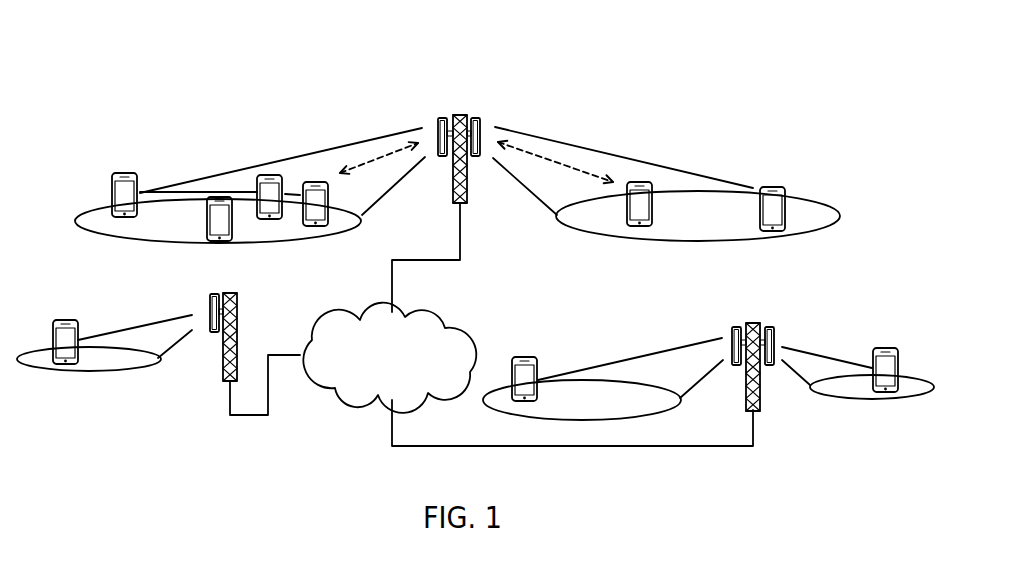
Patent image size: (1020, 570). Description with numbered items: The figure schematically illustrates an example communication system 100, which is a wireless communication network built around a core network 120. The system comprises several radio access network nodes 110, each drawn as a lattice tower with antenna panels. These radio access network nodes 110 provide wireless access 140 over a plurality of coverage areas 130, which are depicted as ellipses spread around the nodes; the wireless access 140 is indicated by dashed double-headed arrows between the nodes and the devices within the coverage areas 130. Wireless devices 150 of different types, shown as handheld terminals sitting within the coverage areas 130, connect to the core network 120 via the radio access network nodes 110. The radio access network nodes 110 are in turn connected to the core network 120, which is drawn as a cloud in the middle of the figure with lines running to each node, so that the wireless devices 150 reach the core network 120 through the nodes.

The communication system 100 is at (118, 100).
The radio access network node 110 is at (461, 115).
The core network 120 is at (389, 358).
The coverage area 130 is at (158, 243).
The wireless access 140 is at (363, 163).
The wireless device 150 is at (308, 228).